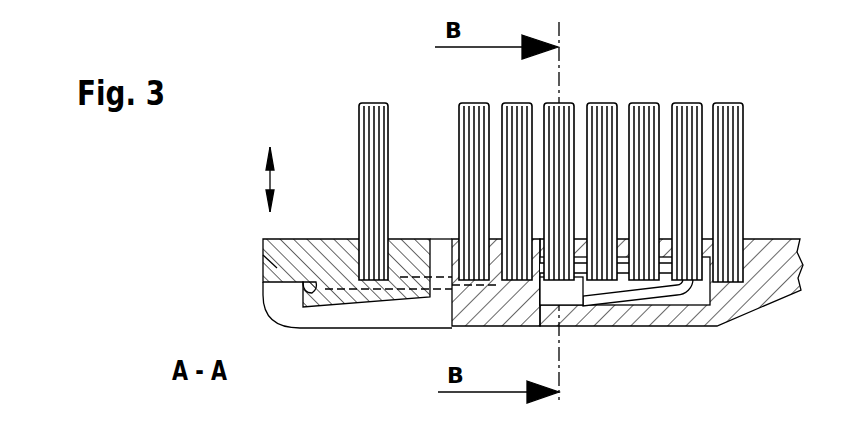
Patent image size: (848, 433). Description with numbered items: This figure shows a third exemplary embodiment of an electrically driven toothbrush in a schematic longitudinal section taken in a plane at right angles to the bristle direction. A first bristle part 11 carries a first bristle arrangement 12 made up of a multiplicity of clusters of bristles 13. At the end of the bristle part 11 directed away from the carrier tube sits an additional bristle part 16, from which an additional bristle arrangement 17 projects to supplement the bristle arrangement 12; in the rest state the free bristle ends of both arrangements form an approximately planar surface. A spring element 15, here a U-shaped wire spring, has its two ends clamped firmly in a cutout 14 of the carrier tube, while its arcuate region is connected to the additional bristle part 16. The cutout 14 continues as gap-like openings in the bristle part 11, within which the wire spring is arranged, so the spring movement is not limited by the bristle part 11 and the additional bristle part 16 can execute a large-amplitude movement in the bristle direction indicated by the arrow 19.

The first bristle part 11 is at (745, 290).
The first bristle arrangement 12 is at (636, 160).
The clusters of bristles 13 is at (641, 103).
The cutout 14 is at (668, 284).
The spring element 15 is at (617, 327).
The additional bristle part 16 is at (277, 258).
The additional bristle arrangement 17 is at (363, 127).
The arrow 19 is at (267, 180).